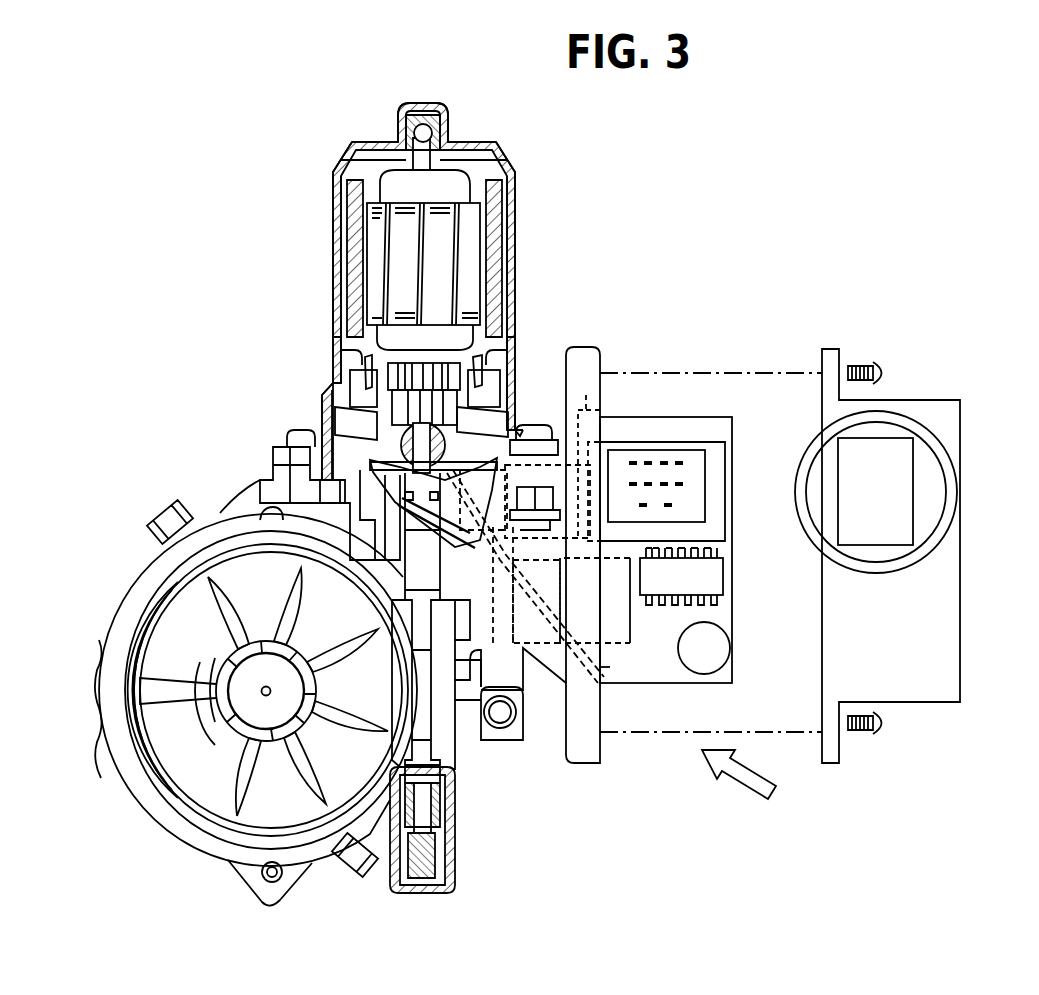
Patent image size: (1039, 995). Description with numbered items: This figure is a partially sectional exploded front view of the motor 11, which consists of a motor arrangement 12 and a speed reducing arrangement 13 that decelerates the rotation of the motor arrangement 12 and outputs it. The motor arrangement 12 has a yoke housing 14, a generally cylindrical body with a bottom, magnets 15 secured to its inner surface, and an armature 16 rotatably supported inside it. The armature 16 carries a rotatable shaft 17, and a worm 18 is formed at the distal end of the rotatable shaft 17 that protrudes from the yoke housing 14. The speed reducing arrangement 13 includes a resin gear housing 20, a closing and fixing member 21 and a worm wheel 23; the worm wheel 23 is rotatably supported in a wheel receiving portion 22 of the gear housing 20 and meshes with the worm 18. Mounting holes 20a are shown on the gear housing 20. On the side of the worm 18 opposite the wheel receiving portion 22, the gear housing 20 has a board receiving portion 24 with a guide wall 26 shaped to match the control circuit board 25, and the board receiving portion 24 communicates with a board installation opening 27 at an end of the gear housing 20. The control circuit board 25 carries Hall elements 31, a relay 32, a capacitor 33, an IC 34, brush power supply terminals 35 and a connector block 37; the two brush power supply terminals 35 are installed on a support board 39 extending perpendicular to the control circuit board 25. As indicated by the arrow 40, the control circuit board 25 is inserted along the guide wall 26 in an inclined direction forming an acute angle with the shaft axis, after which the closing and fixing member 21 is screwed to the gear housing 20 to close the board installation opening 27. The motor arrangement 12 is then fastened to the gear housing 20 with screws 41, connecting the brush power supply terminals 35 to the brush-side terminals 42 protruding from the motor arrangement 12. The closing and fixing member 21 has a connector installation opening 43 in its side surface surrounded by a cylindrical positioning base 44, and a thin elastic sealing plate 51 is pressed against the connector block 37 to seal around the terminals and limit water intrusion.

The motor 11 is at (192, 347).
The motor arrangement 12 is at (292, 324).
The speed reducing arrangement 13 is at (216, 400).
The yoke housing 14 is at (470, 142).
The magnets 15 is at (500, 218).
The armature 16 is at (498, 172).
The rotatable shaft 17 is at (420, 167).
The worm 18 is at (440, 750).
The gear housing 20 is at (590, 345).
The mounting hole 20a is at (500, 716).
The closing and fixing member 21 is at (945, 675).
The wheel receiving portion 22 is at (182, 833).
The worm wheel 23 is at (157, 764).
The board receiving portion 24 is at (585, 453).
The control circuit board 25 is at (700, 430).
The guide wall 26 is at (470, 455).
The board installation opening 27 is at (610, 667).
The Hall elements 31 is at (433, 503).
The relay 32 is at (608, 638).
The capacitor 33 is at (717, 647).
The IC 34 is at (718, 575).
The brush power supply terminals 35 is at (487, 643).
The connector block 37 is at (715, 458).
The support board 39 is at (537, 601).
The arrow 40 is at (744, 795).
The screws 41 is at (537, 430).
The brush-side terminals 42 is at (525, 495).
The connector installation opening 43 is at (925, 515).
The positioning base 44 is at (935, 437).
The sealing plate 51 is at (695, 505).